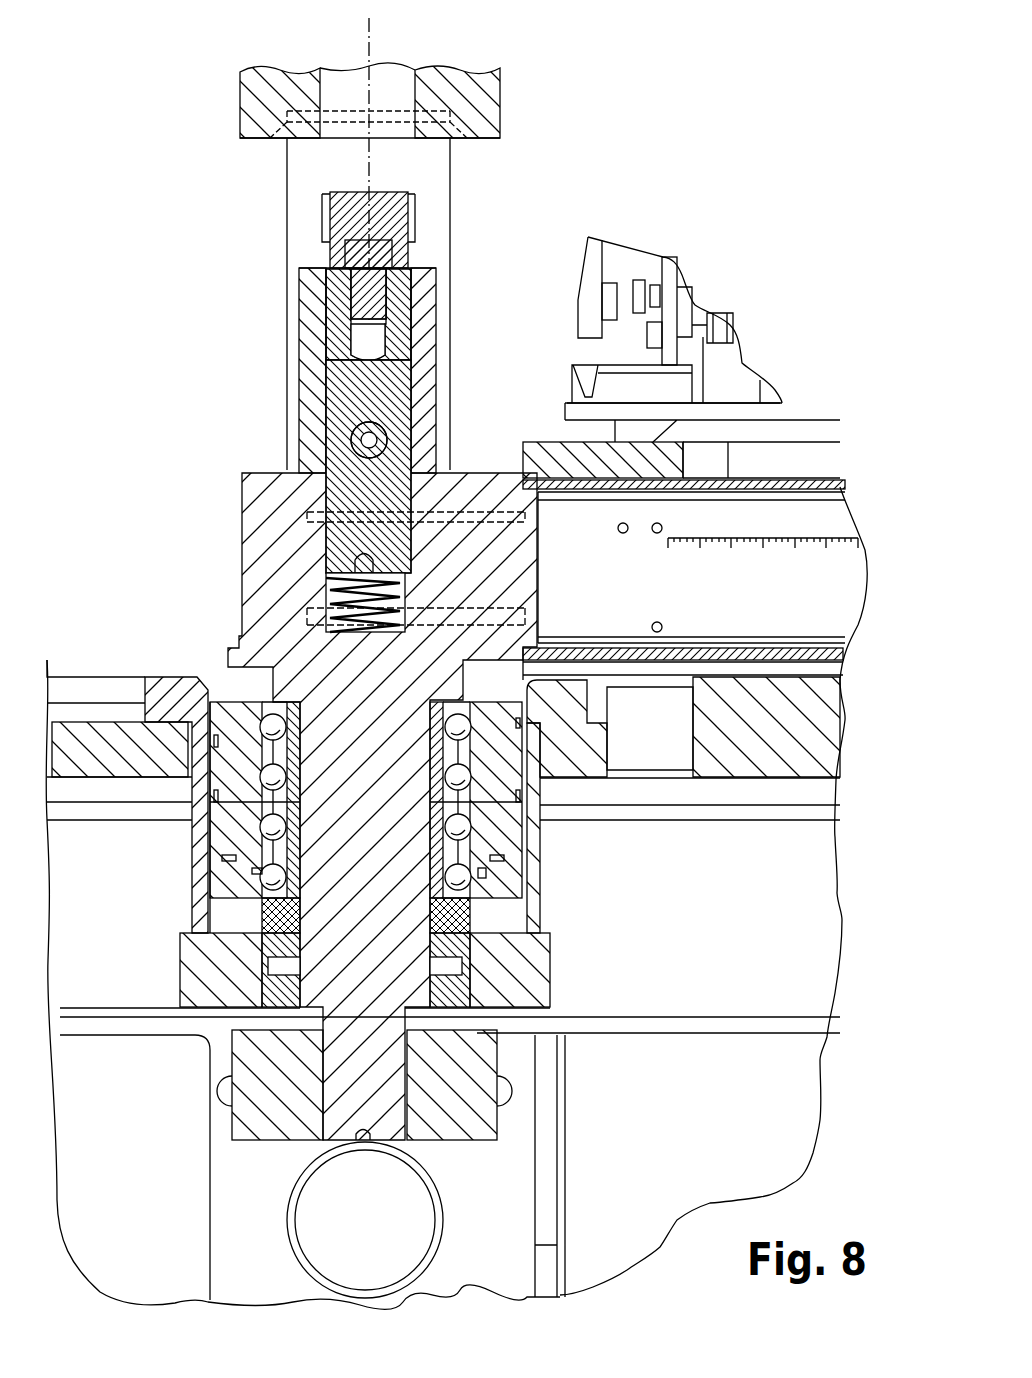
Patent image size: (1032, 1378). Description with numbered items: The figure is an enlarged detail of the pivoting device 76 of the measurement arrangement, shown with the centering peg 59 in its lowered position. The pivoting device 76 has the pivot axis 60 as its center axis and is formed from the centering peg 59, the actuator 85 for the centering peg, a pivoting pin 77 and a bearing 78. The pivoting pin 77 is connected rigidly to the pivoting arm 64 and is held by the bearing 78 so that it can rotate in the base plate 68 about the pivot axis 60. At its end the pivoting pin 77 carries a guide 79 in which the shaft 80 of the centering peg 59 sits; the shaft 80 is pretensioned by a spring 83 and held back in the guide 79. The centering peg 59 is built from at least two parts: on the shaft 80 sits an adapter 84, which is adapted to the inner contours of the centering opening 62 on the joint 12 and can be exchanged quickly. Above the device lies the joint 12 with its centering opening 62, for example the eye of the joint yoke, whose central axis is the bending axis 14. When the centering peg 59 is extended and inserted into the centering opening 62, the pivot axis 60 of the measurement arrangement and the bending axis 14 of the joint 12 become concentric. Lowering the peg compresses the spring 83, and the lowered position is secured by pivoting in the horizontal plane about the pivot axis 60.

The joint 12 is at (484, 97).
The bending axis 14 is at (366, 46).
The centering peg 59 is at (330, 334).
The pivot axis 60 is at (365, 160).
The centering opening 62 is at (400, 134).
The pivoting arm 64 is at (828, 622).
The base plate 68 is at (815, 744).
The pivoting device 76 is at (176, 645).
The pivoting pin 77 is at (358, 985).
The bearing 78 is at (484, 886).
The guide 79 is at (426, 386).
The shaft 80 is at (402, 300).
The spring 83 is at (342, 594).
The adapter 84 is at (346, 212).
The actuator 85 is at (356, 440).